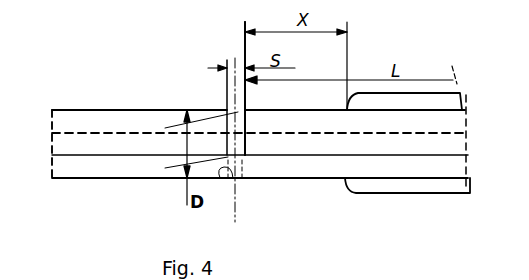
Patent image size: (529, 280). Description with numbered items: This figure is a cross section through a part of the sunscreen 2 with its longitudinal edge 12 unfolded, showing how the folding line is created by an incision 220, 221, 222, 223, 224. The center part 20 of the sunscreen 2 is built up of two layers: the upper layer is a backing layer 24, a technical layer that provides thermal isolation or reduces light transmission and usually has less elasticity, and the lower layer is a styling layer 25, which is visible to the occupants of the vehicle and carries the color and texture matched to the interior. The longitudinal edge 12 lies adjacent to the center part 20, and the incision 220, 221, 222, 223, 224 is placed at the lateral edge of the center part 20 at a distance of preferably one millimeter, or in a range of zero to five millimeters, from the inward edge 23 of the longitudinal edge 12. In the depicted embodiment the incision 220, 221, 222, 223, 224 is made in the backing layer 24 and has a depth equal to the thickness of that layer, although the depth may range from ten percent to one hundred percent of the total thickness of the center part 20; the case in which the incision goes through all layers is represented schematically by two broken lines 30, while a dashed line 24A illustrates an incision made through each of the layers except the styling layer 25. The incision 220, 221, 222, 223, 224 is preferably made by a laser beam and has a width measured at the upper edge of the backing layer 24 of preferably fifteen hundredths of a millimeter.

The sunscreen 2 is at (259, 140).
The center part 20 is at (260, 140).
The dashed line 24A is at (137, 133).
The backing layer 24 is at (179, 123).
The styling layer 25 is at (102, 168).
The broken lines 30 is at (222, 178).
The incision 220 is at (336, 139).
The incision 221 is at (336, 139).
The incision 222 is at (336, 139).
The incision 223 is at (336, 139).
The incision 224 is at (240, 135).
The longitudinal edge 12 is at (378, 107).
The inward edge 23 is at (345, 109).